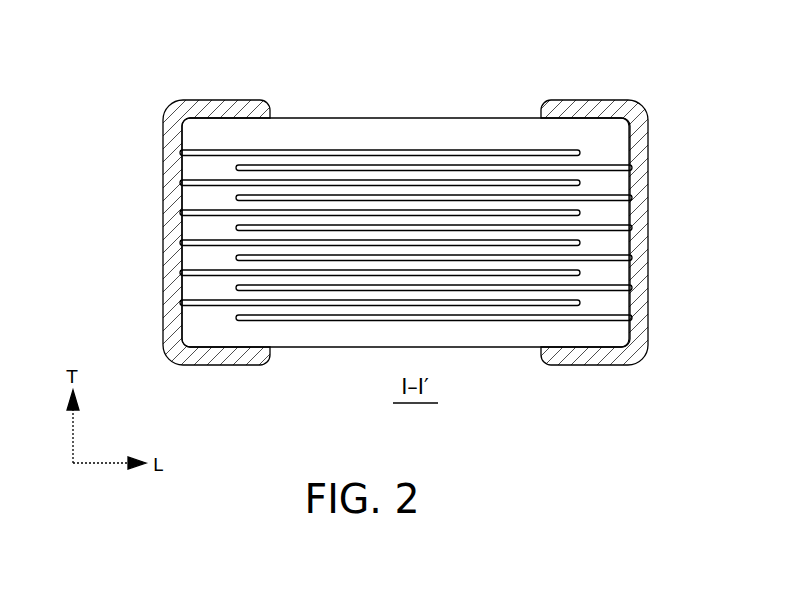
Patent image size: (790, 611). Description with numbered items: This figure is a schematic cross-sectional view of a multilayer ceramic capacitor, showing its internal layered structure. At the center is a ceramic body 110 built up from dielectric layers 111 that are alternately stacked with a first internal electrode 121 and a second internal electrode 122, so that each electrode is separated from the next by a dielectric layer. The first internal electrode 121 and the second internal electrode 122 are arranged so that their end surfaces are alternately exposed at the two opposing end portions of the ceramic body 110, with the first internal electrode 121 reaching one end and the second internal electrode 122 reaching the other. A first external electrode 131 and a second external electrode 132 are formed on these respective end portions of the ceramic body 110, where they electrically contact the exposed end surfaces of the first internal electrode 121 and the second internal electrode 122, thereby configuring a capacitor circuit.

The ceramic body 110 is at (408, 118).
The dielectric layers 111 is at (192, 168).
The first internal electrode 121 is at (222, 150).
The second internal electrode 122 is at (236, 168).
The first external electrode 131 is at (218, 100).
The second external electrode 132 is at (598, 100).